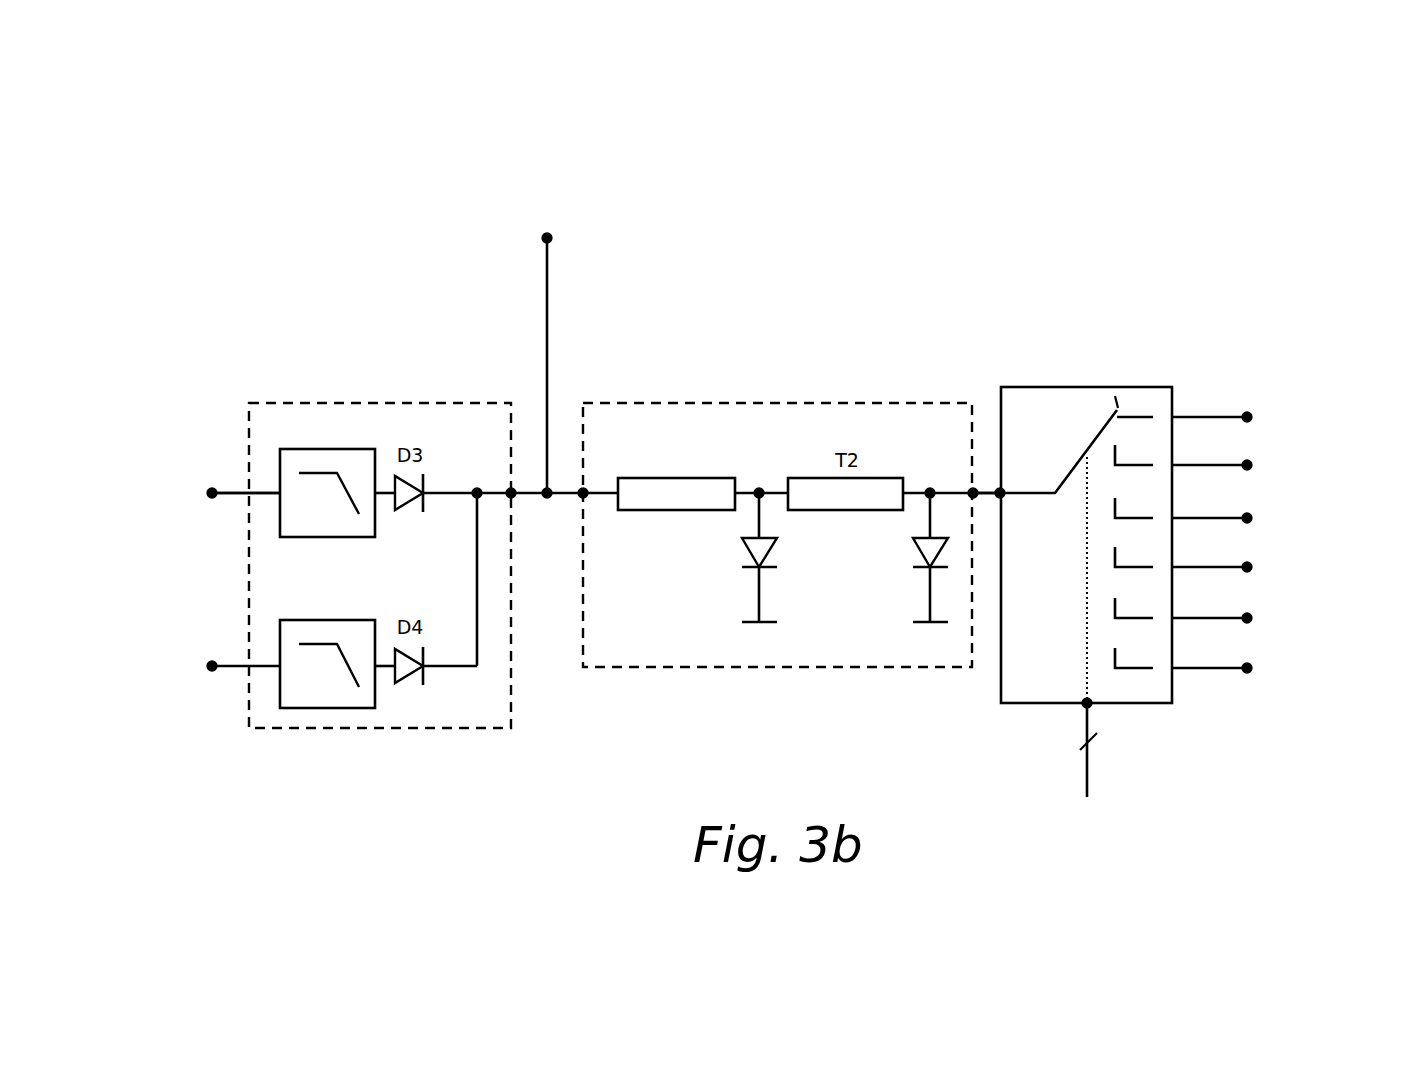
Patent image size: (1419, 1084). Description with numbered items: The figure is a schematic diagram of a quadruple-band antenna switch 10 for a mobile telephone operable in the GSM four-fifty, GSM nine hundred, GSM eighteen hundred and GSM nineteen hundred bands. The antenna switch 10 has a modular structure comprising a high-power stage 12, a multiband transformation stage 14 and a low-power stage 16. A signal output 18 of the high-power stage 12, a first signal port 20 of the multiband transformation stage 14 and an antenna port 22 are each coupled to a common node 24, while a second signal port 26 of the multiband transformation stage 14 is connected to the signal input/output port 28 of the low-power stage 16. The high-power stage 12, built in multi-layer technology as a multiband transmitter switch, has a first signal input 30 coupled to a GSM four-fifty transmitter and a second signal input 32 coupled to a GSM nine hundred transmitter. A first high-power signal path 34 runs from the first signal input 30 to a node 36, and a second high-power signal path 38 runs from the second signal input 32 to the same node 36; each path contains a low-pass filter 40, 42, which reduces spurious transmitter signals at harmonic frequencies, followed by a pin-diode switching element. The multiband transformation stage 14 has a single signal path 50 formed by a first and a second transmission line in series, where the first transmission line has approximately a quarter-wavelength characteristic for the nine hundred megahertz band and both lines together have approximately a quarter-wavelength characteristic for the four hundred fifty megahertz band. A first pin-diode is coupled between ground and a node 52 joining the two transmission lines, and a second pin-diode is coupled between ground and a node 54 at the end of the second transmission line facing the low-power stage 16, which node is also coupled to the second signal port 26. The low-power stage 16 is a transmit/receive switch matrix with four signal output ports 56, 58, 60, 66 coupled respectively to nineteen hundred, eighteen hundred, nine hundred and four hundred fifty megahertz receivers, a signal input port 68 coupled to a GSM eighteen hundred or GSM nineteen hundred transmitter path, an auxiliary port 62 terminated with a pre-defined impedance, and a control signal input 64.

The antenna switch 10 is at (872, 297).
The high-power stage 12 is at (270, 402).
The multiband transformation stage 14 is at (662, 402).
The low-power stage 16 is at (1174, 395).
The signal output 18 is at (511, 489).
The first signal port 20 is at (583, 489).
The antenna port 22 is at (545, 238).
The node 24 is at (547, 499).
The second signal port 26 is at (974, 497).
The signal input/output port 28 is at (973, 489).
The first signal input 30 is at (212, 489).
The second signal input 32 is at (212, 662).
The first high-power signal path 34 is at (268, 492).
The node 36 is at (477, 489).
The second high-power signal path 38 is at (267, 667).
The low-pass filter 40 is at (323, 458).
The low-pass filter 42 is at (323, 695).
The signal path 50 is at (767, 490).
The node 52 is at (759, 489).
The node 54 is at (930, 489).
The signal output port 56 is at (1247, 413).
The signal output port 58 is at (1247, 461).
The signal output port 60 is at (1248, 514).
The auxiliary port 62 is at (1248, 673).
The control signal input 64 is at (1090, 705).
The signal output port 66 is at (1250, 569).
The signal input port 68 is at (1250, 621).